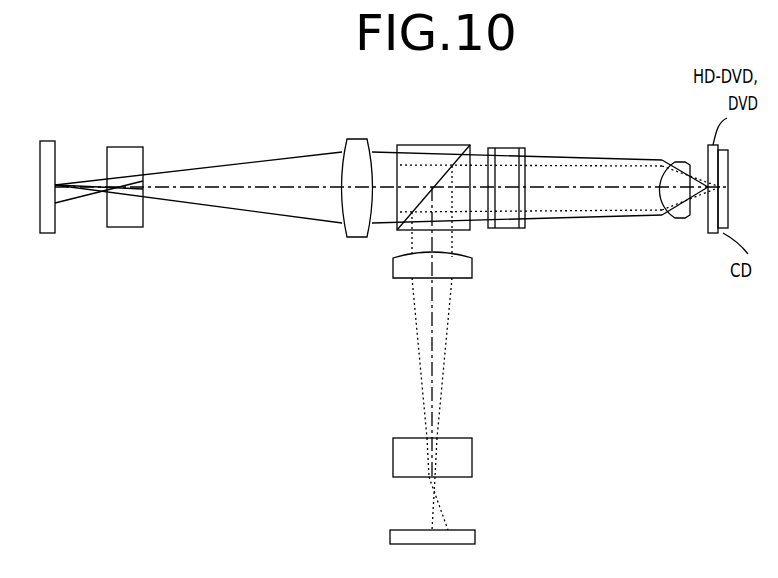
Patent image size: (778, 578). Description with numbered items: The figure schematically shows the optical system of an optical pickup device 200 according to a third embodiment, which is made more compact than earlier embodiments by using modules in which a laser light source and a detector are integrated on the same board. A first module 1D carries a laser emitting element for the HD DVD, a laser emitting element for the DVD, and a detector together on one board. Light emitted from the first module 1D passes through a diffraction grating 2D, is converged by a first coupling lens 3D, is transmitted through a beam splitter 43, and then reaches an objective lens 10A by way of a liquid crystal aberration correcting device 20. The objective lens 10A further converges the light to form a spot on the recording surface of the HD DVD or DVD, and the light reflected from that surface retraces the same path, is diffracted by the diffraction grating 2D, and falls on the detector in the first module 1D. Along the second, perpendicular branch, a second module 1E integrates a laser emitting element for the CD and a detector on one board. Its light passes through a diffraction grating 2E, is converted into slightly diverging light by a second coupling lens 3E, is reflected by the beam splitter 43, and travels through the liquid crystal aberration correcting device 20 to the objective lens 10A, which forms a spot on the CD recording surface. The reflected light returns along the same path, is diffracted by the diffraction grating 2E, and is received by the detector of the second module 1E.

The optical pickup device 200 is at (243, 113).
The first module 1D is at (47, 140).
The diffraction grating 2D is at (125, 147).
The first coupling lens 3D is at (354, 138).
The beam splitter 43 is at (441, 145).
The liquid crystal aberration correcting device 20 is at (514, 148).
The objective lens 10A is at (660, 163).
The second coupling lens 3E is at (472, 268).
The diffraction grating 2E is at (472, 455).
The second module 1E is at (475, 534).